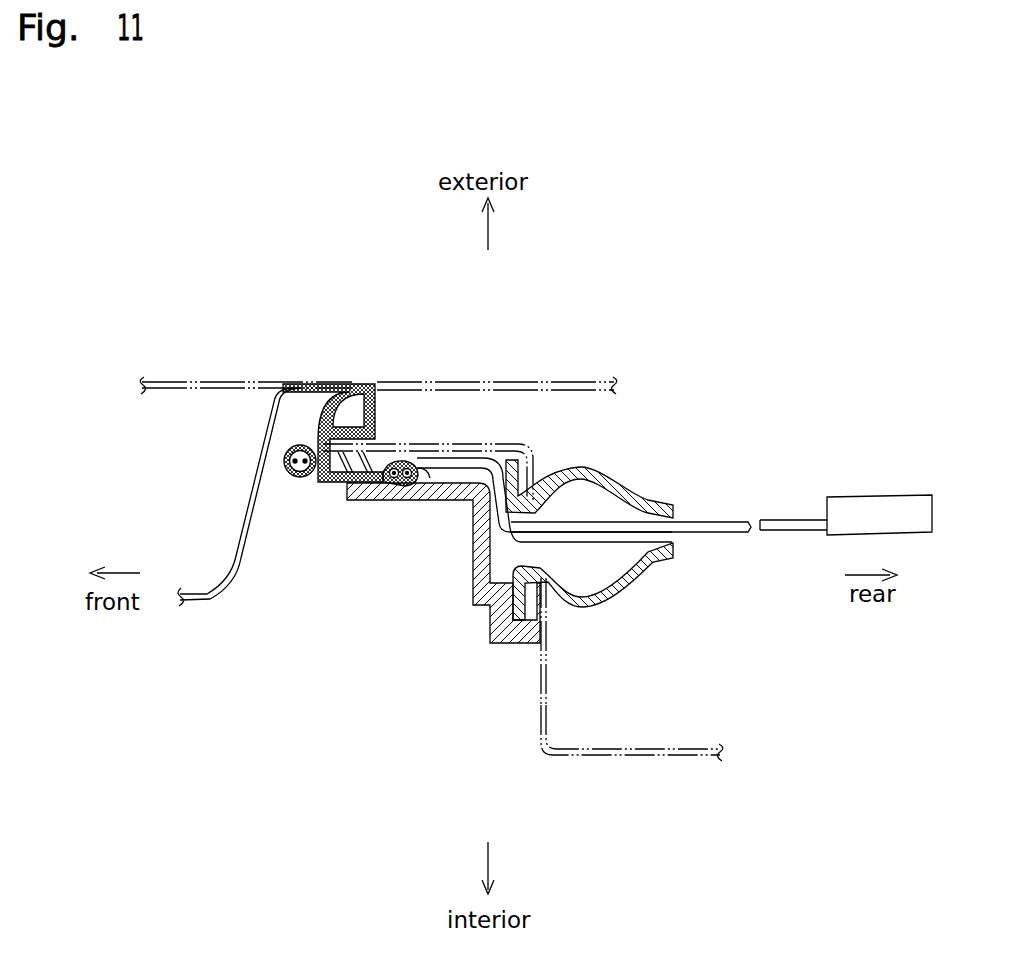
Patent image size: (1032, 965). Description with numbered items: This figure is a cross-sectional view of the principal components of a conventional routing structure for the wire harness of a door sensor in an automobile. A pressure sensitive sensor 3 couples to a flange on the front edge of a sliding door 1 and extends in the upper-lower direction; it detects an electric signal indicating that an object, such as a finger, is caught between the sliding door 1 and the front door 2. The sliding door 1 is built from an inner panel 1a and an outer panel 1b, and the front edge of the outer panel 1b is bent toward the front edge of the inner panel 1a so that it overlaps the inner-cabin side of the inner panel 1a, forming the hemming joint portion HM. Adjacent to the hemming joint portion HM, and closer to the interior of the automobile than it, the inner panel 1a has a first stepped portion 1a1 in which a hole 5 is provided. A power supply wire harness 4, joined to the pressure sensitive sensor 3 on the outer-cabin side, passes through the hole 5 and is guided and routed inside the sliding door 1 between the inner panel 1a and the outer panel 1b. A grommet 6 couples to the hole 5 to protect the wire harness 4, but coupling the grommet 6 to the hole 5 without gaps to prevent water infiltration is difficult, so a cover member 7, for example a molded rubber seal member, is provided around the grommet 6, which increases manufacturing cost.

The sliding door 1 is at (537, 372).
The inner panel 1a is at (541, 704).
The first stepped portion 1a1 is at (540, 672).
The outer panel 1b is at (425, 380).
The front door 2 is at (180, 380).
The pressure sensitive sensor 3 is at (305, 434).
The power supply wire harness 4 is at (748, 517).
The hole 5 is at (530, 556).
The grommet 6 is at (641, 480).
The cover member 7 is at (471, 518).
The hemming joint portion HM is at (317, 383).